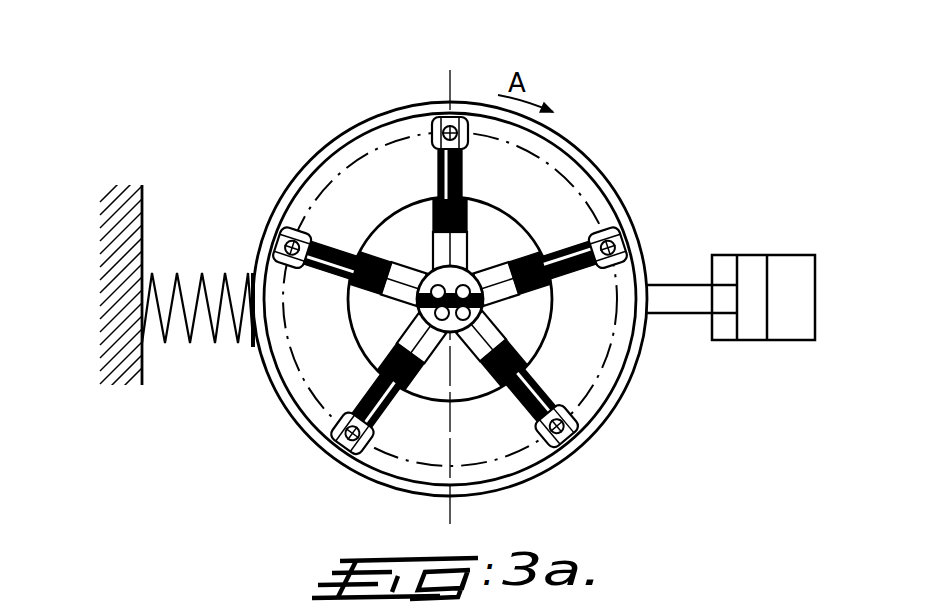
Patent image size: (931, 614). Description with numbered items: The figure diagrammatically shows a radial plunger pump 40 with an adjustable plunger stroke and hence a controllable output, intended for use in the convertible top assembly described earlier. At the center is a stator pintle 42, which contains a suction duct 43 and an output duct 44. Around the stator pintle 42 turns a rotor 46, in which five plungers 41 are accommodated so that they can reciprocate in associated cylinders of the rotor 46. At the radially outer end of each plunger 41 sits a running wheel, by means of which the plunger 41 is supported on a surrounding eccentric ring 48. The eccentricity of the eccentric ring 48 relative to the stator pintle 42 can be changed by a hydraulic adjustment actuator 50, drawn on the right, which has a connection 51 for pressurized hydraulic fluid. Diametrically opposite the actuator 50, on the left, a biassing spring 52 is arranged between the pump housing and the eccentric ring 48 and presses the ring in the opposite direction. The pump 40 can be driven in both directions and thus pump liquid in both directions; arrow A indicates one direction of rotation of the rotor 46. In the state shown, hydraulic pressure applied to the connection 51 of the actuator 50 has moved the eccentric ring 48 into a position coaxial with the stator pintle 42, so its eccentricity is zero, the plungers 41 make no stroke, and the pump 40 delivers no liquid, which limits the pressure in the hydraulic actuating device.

The radial plunger pump 40 is at (406, 92).
The plungers 41 is at (467, 177).
The stator pintle 42 is at (341, 369).
The suction duct 43 is at (432, 280).
The output duct 44 is at (423, 313).
The rotor 46 is at (540, 332).
The eccentric ring 48 is at (562, 467).
The hydraulic adjustment actuator 50 is at (757, 240).
The connection 51 is at (810, 343).
The biassing spring 52 is at (172, 278).